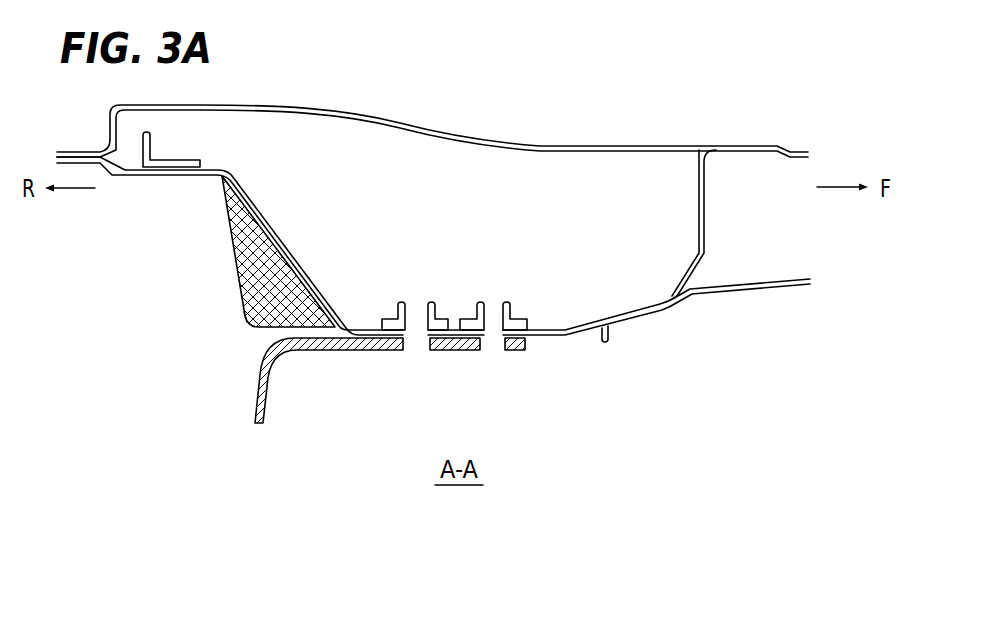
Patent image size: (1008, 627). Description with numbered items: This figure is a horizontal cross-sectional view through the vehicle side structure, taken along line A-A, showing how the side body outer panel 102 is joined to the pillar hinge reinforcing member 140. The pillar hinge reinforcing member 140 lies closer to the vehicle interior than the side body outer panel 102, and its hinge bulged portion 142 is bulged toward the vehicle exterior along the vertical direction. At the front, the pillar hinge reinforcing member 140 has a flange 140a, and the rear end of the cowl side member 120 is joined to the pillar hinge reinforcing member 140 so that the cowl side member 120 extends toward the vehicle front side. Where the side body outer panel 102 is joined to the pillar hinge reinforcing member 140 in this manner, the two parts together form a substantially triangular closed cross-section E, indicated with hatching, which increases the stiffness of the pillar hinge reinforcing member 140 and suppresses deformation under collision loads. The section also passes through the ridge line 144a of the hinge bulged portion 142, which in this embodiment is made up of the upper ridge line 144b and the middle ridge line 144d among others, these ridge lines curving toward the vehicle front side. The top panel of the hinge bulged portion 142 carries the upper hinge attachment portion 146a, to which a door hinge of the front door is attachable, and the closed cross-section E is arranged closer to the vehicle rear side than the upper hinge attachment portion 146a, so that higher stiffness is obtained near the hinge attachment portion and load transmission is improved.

The pillar hinge reinforcing member 140 is at (741, 212).
The flange 140a is at (208, 180).
The ridge line 144a is at (337, 323).
The upper ridge line 144b is at (278, 251).
The middle ridge line 144d is at (278, 251).
The upper hinge attachment portion 146a is at (368, 327).
The side body outer panel 102 is at (230, 270).
The cowl side member 120 is at (748, 290).
The hinge bulged portion 142 is at (582, 327).
The closed cross-section E is at (242, 313).